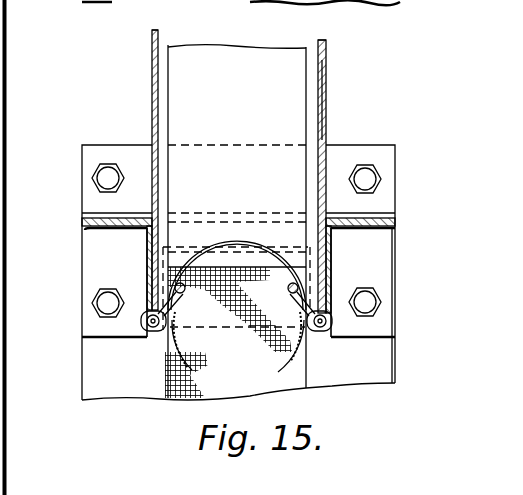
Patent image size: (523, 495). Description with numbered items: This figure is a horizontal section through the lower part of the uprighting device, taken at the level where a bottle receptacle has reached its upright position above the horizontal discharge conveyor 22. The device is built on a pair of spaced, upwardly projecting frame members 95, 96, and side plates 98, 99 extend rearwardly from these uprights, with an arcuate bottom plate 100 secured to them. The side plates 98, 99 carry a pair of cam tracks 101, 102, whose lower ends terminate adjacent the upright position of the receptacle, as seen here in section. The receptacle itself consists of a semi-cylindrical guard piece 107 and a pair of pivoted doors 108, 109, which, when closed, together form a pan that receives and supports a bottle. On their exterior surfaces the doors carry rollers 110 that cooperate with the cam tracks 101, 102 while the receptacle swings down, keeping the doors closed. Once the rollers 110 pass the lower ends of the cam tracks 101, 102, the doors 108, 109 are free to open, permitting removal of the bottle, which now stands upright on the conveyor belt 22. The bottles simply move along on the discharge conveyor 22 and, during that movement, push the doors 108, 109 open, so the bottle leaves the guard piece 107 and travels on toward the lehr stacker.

The horizontal discharge conveyor 22 is at (176, 394).
The frame member 95 is at (88, 224).
The frame member 96 is at (396, 228).
The side plate 98 is at (152, 57).
The side plate 99 is at (326, 103).
The arcuate bottom plate 100 is at (292, 134).
The cam track 101 is at (312, 58).
The cam track 102 is at (175, 43).
The semi-cylindrical guard piece 107 is at (240, 237).
The pivoted door 108 is at (176, 346).
The pivoted door 109 is at (290, 358).
The roller 110 is at (148, 330).